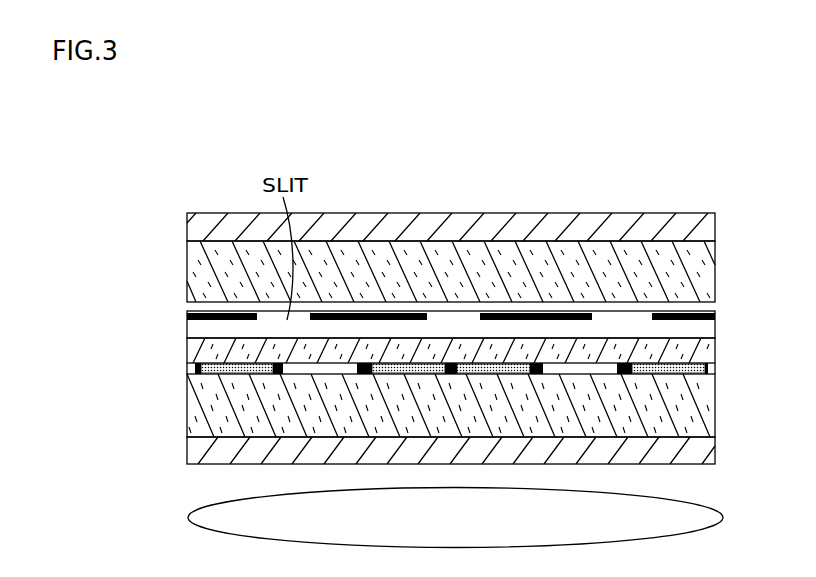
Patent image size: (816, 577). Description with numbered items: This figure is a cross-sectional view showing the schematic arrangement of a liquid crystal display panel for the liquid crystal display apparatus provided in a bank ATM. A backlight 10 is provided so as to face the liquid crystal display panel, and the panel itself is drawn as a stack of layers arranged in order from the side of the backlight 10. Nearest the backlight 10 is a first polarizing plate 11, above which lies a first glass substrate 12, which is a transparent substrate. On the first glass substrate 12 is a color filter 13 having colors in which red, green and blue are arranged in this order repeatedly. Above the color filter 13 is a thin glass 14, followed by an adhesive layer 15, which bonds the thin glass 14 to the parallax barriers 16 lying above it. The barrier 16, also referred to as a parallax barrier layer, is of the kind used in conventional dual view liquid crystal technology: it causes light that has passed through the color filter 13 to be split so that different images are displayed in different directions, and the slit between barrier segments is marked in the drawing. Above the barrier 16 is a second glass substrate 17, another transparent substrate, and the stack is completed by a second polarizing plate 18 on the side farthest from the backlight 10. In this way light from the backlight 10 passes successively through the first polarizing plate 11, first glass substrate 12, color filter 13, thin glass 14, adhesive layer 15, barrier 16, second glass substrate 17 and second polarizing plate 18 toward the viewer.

The backlight 10 is at (190, 518).
The first polarizing plate 11 is at (195, 452).
The first glass substrate 12 is at (197, 404).
The color filter 13 is at (195, 370).
The thin glass 14 is at (703, 351).
The adhesive layer 15 is at (195, 329).
The parallax barrier 16 is at (715, 311).
The second glass substrate 17 is at (707, 269).
The second polarizing plate 18 is at (707, 224).